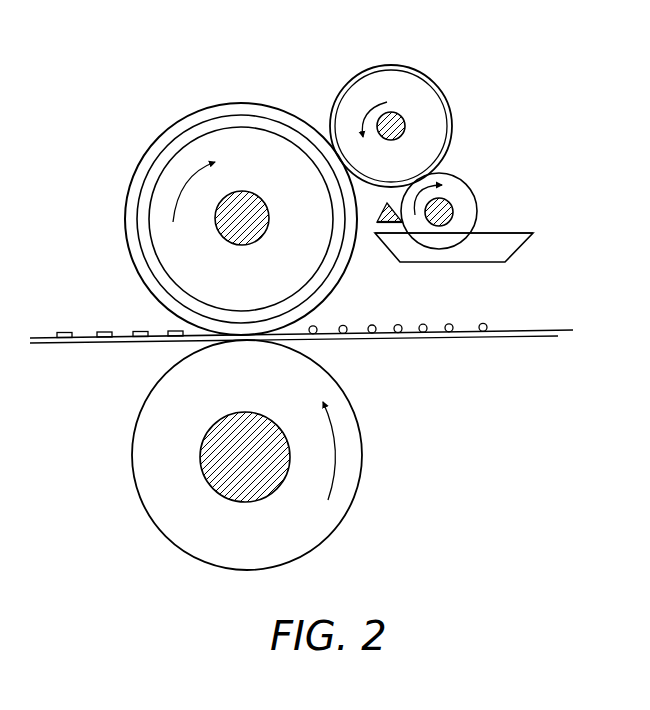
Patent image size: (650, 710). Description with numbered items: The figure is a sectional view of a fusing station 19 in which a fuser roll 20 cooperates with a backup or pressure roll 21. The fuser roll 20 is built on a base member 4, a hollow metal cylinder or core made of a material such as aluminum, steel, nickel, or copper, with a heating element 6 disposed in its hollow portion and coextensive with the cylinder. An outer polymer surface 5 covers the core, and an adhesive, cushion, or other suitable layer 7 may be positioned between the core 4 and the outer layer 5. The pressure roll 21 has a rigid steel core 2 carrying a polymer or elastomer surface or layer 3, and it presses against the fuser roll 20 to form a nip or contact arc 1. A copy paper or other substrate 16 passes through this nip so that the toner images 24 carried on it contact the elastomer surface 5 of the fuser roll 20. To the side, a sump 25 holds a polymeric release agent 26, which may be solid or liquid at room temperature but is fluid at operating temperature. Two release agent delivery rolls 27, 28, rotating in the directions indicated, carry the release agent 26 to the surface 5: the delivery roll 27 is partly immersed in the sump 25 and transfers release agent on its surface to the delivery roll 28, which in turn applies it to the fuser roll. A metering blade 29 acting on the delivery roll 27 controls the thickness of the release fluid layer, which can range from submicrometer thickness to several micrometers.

The fusing station 19 is at (108, 55).
The fuser roll 20 is at (118, 255).
The backup or pressure roll 21 is at (120, 398).
The nip or contact arc 1 is at (188, 345).
The rigid steel core 2 is at (210, 477).
The polymer or elastomer surface or layer 3 is at (313, 540).
The base member 4 is at (272, 132).
The polymer surface 5 is at (172, 128).
The heating element 6 is at (243, 192).
The adhesive, cushion, or other suitable layer 7 is at (288, 123).
The copy paper or other substrate 16 is at (463, 338).
The toner images 24 is at (487, 322).
The sump 25 is at (522, 246).
The polymeric release agent 26 is at (500, 232).
The release agent delivery roll 27 is at (468, 187).
The release agent delivery roll 28 is at (450, 113).
The metering blade 29 is at (380, 218).